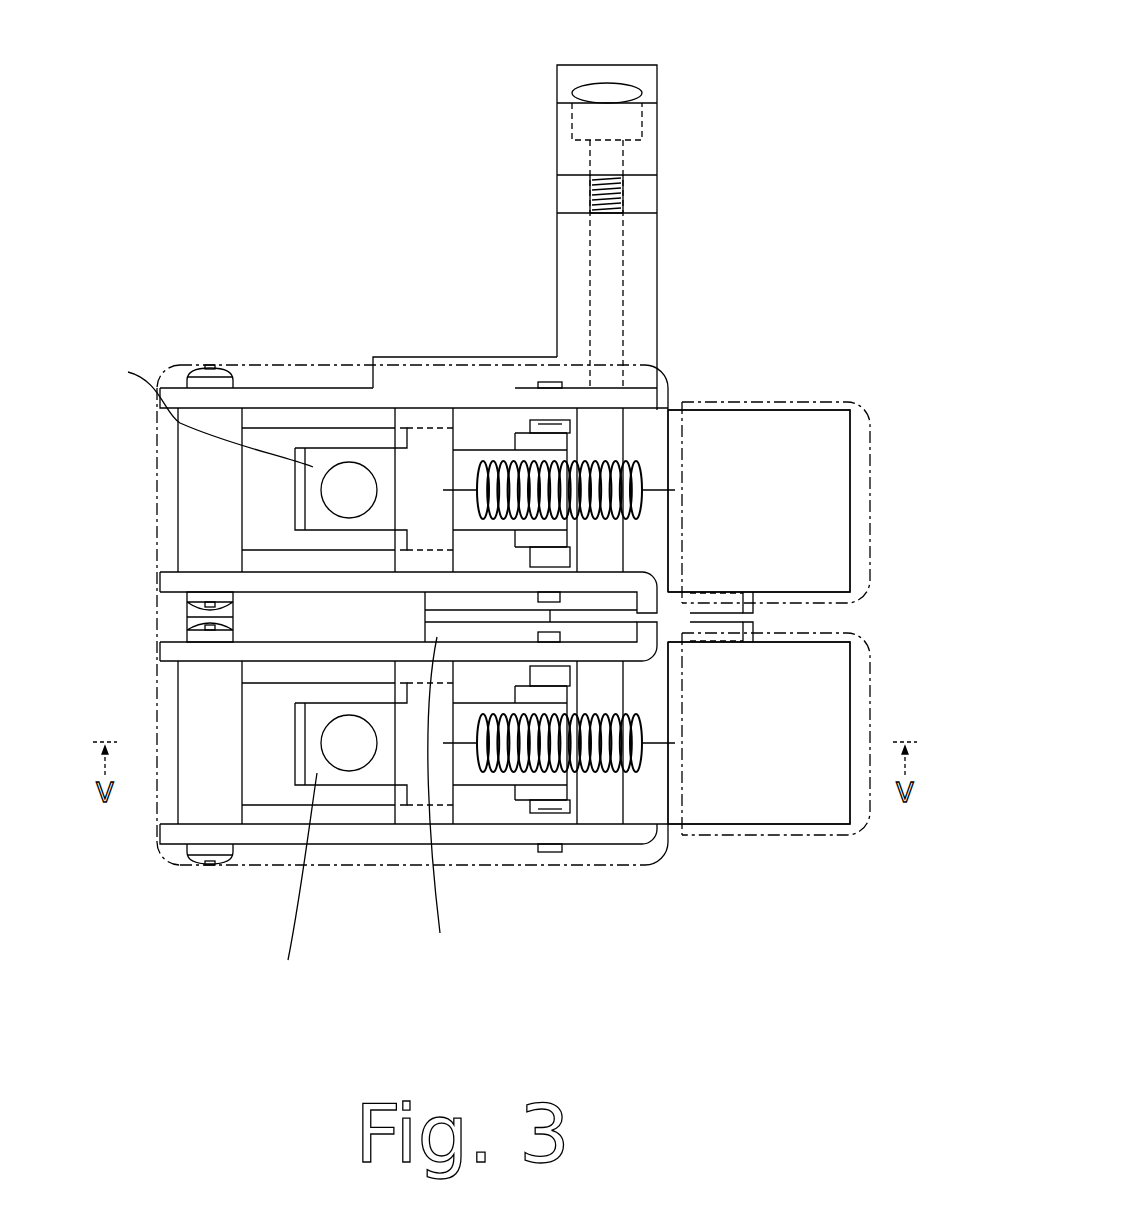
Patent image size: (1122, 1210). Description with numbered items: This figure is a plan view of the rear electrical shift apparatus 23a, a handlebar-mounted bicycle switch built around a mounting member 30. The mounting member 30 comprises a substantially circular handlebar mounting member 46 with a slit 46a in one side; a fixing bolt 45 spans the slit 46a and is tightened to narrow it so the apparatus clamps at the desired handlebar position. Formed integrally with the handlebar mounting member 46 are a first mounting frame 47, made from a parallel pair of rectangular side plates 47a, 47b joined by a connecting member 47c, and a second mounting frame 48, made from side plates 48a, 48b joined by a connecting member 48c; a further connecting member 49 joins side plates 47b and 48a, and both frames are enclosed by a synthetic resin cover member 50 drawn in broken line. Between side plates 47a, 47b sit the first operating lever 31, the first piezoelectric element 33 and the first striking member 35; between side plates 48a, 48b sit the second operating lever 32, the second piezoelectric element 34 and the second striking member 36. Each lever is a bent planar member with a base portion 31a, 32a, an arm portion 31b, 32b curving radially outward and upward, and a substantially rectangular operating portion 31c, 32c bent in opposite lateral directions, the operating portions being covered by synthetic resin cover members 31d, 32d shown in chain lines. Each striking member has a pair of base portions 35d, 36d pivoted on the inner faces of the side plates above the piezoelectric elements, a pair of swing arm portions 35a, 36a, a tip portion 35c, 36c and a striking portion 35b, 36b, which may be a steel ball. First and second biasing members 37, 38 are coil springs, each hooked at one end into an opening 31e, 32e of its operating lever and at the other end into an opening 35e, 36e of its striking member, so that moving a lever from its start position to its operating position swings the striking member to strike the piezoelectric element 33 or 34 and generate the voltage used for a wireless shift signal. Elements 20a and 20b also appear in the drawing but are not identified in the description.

The first permanent magnet 20a is at (842, 463).
The second permanent magnet 20b is at (197, 517).
The rear electrical shift apparatus 23a is at (408, 242).
The mounting member 30 is at (677, 318).
The first operating lever 31 is at (828, 432).
The first base portion 31a is at (478, 600).
The first arm portion 31b is at (693, 645).
The first operating portion 31c is at (762, 425).
The first synthetic resin cover member 31d is at (818, 402).
The opening 31e is at (680, 503).
The second operating lever 32 is at (822, 652).
The second base portion 32a is at (442, 804).
The second arm portion 32b is at (682, 645).
The second operating portion 32c is at (812, 815).
The second synthetic resin cover member 32d is at (843, 835).
The opening 32e is at (673, 832).
The first piezoelectric element 33 is at (273, 440).
The second piezoelectric element 34 is at (265, 700).
The first striking member 35 is at (320, 447).
The first swing arm portions 35a is at (472, 420).
The first striking portion 35b is at (330, 505).
The first tip portion 35c is at (191, 407).
The first base portions 35d is at (512, 447).
The opening 35e is at (443, 488).
The second striking member 36 is at (325, 705).
The second swing arm portions 36a is at (495, 800).
The second striking portion 36b is at (360, 758).
The second tip portion 36c is at (285, 886).
The second base portions 36d is at (528, 797).
The opening 36e is at (455, 683).
The first biasing member 37 is at (508, 447).
The second biasing member 38 is at (620, 767).
The fixing bolt 45 is at (620, 185).
The handlebar mounting member 46 is at (652, 143).
The slit 46a is at (640, 212).
The first mounting frame 47 is at (248, 386).
The side plate 47a is at (193, 400).
The side plate 47b is at (165, 582).
The connecting member 47c is at (193, 460).
The second mounting frame 48 is at (295, 835).
The side plate 48a is at (167, 657).
The side plate 48b is at (342, 837).
The connecting member 48c is at (188, 795).
The connecting member 49 is at (190, 624).
The synthetic resin cover member 50 is at (162, 372).